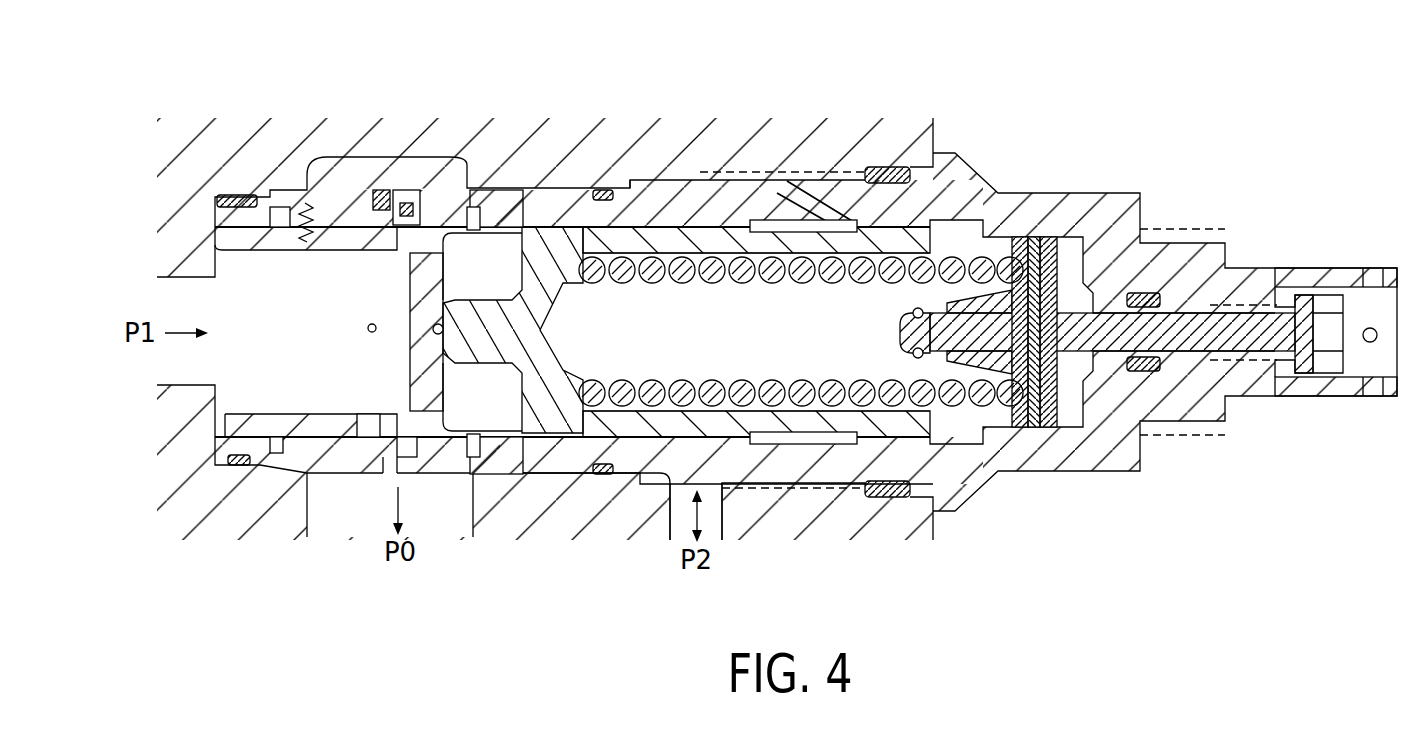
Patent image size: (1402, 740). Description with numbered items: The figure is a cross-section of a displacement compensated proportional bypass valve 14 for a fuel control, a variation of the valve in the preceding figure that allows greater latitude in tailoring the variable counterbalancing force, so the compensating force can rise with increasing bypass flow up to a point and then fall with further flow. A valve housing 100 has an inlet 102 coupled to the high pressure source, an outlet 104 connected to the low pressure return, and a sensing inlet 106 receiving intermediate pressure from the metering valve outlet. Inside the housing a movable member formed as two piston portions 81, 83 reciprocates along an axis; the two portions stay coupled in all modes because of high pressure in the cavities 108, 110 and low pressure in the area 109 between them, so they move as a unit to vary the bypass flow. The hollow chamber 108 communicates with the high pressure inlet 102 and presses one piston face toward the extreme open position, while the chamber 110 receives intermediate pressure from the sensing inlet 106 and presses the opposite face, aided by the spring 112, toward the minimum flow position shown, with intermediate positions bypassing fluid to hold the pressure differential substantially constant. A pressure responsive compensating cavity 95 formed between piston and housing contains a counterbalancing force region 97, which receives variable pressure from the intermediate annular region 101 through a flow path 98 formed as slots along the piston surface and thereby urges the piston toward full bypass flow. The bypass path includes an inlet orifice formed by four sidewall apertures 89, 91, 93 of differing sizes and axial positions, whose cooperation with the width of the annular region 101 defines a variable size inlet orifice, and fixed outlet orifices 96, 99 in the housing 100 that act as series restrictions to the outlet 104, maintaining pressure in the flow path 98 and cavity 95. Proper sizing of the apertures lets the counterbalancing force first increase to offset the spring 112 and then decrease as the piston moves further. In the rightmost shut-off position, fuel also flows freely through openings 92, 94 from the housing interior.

The proportional bypass valve 14 is at (1141, 110).
The piston portion 81 is at (722, 230).
The piston portion 83 is at (513, 222).
The inlet orifice aperture 89 is at (348, 190).
The inlet orifice aperture 91 is at (370, 324).
The opening 92 is at (272, 230).
The inlet orifice aperture 93 is at (367, 410).
The opening 94 is at (267, 469).
The compensating cavity 95 is at (445, 200).
The fixed outlet orifice 96 is at (411, 472).
The counterbalancing force region 97 is at (462, 460).
The flow path 98 is at (295, 195).
The fixed outlet orifice 99 is at (387, 210).
The valve housing 100 is at (1102, 453).
The intermediate annular region 101 is at (383, 473).
The inlet 102 is at (177, 385).
The outlet 104 is at (307, 510).
The sensing inlet 106 is at (715, 520).
The chamber 108 is at (280, 372).
The area 109 is at (497, 270).
The chamber 110 is at (670, 337).
The spring 112 is at (755, 393).